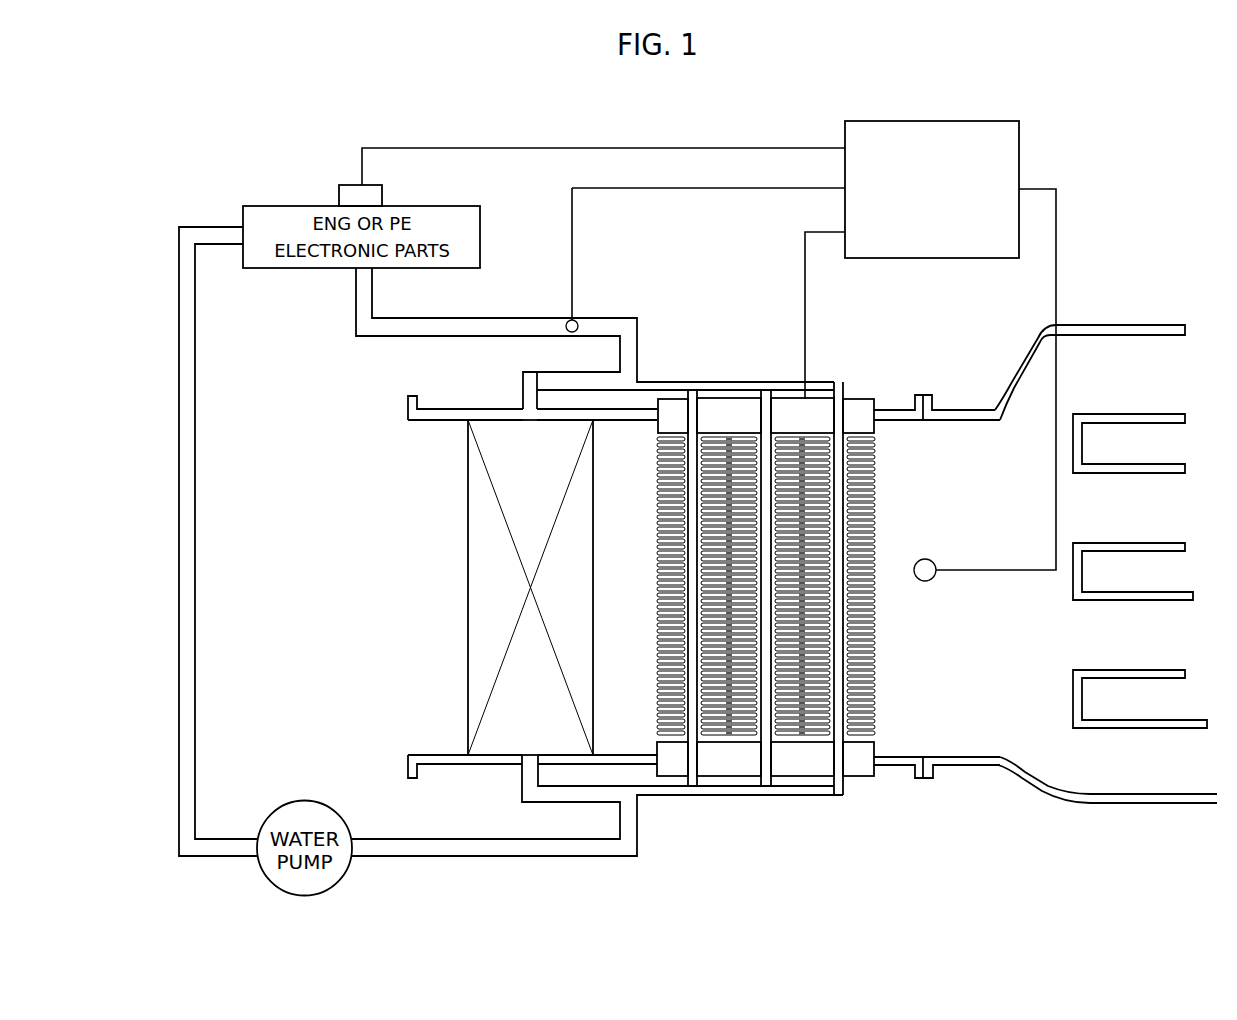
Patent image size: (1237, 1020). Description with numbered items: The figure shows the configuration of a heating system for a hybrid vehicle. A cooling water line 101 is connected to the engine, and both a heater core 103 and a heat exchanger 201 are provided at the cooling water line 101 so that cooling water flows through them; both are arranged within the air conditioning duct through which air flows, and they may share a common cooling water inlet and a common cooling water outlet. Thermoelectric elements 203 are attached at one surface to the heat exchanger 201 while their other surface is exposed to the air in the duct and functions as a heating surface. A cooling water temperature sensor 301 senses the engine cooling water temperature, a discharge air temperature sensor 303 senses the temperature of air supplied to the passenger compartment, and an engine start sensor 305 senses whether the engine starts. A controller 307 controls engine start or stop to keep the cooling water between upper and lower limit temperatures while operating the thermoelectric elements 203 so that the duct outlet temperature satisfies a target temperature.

The cooling water line 101 is at (358, 333).
The heater core 103 is at (470, 642).
The heat exchanger 201 is at (838, 402).
The thermoelectric elements 203 is at (688, 729).
The cooling water temperature sensor 301 is at (578, 320).
The discharge air temperature sensor 303 is at (925, 575).
The engine start sensor 305 is at (350, 188).
The controller 307 is at (1012, 147).